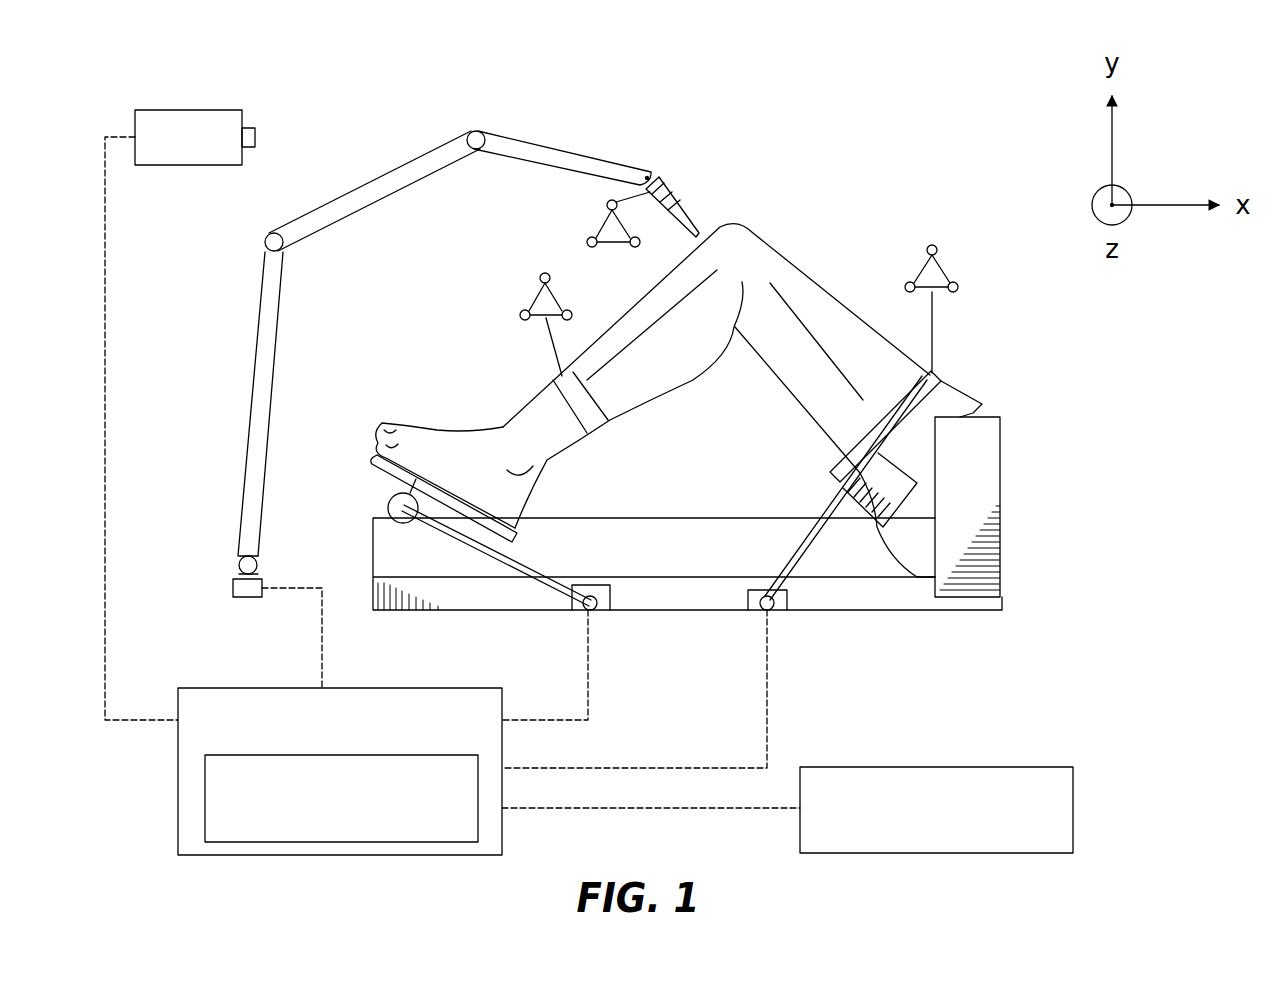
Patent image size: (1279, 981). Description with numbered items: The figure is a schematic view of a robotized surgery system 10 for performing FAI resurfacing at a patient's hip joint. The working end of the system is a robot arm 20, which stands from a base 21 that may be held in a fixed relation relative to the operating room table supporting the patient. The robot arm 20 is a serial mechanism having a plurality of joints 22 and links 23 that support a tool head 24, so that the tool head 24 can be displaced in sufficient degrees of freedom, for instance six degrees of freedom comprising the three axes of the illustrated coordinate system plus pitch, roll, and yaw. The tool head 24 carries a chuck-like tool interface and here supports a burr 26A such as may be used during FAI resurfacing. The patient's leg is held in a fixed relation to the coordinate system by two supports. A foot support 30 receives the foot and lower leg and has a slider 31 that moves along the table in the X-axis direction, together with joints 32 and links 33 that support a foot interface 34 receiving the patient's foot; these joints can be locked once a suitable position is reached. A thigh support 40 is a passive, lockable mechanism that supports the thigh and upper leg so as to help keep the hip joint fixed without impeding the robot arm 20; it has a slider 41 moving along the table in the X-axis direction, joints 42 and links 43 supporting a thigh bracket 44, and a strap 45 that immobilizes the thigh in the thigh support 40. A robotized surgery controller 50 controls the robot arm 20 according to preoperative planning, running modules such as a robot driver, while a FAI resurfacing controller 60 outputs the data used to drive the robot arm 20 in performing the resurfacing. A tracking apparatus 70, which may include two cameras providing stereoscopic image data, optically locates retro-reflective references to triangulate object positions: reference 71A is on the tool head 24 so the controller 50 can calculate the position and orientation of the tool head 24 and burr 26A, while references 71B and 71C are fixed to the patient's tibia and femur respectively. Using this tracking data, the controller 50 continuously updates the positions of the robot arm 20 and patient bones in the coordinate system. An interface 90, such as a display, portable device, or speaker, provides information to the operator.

The robotized surgery system 10 is at (925, 170).
The robot arm 20 is at (377, 146).
The base 21 is at (233, 594).
The joints 22 is at (238, 565).
The links 23 is at (266, 378).
The tool head 24 is at (701, 200).
The burr 26A is at (705, 223).
The foot support 30 is at (565, 556).
The slider 31 is at (611, 605).
The joints 32 is at (393, 508).
The links 33 is at (397, 492).
The foot interface 34 is at (512, 527).
The thigh support 40 is at (794, 528).
The slider 41 is at (792, 600).
The joints 42 is at (771, 613).
The links 43 is at (823, 540).
The thigh bracket 44 is at (917, 580).
The strap 45 is at (958, 392).
The robotized surgery controller 50 is at (178, 758).
The FAI resurfacing controller 60 is at (205, 808).
The tracking apparatus 70 is at (195, 110).
The reference 71A is at (600, 232).
The reference 71B is at (553, 350).
The reference 71C is at (933, 320).
The interface 90 is at (1073, 812).